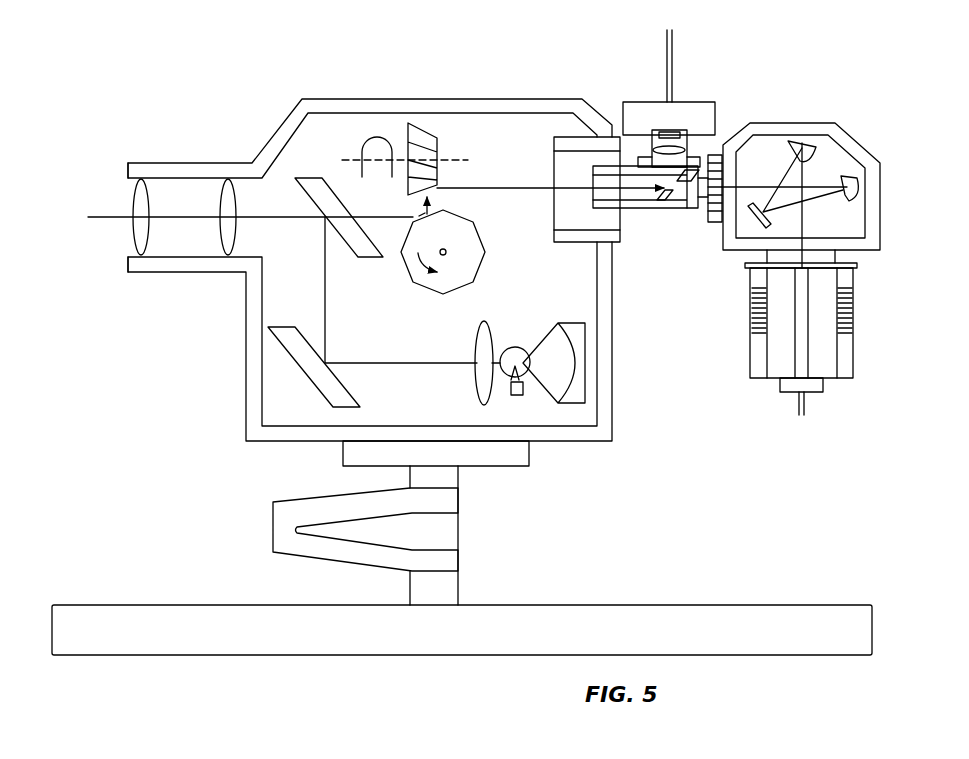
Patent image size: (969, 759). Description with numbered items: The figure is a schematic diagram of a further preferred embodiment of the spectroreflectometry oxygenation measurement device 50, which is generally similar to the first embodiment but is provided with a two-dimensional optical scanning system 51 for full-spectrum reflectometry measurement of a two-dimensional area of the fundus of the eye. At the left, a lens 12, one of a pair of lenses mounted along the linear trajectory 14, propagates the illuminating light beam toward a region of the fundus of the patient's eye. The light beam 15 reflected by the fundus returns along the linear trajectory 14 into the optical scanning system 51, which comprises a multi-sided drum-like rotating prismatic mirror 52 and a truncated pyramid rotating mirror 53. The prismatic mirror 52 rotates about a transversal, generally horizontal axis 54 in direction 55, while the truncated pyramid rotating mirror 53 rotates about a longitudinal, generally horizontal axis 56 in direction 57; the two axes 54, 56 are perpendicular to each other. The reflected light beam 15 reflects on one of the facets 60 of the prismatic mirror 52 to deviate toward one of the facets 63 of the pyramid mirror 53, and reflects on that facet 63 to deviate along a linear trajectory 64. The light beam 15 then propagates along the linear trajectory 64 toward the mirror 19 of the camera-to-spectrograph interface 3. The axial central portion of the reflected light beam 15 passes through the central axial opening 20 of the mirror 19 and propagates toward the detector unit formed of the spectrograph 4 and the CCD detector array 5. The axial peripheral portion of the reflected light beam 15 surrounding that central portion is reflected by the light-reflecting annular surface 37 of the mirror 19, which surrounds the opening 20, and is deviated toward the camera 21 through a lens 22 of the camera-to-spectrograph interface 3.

The camera-to-spectrograph interface 3 is at (643, 216).
The spectrograph 4 is at (856, 126).
The CCD detector array 5 is at (747, 350).
The lens 12 is at (146, 192).
The linear trajectory 14 is at (193, 215).
The reflected light beam 15 is at (265, 218).
The mirror 19 is at (663, 204).
The central axial opening 20 is at (681, 188).
The camera 21 is at (648, 108).
The lens 22 is at (673, 148).
The light-reflecting annular surface 37 is at (650, 182).
The spectroreflectometry oxygenation measurement device 50 is at (278, 96).
The two-dimensional optical scanning system 51 is at (356, 180).
The multi-sided drum-like rotating prismatic mirror 52 is at (433, 283).
The truncated pyramid rotating mirror 53 is at (428, 137).
The transversal axis 54 is at (448, 252).
The direction of rotation 55 is at (410, 272).
The longitudinal axis 56 is at (358, 162).
The direction of rotation 57 is at (388, 139).
The facet 60 is at (421, 214).
The facet 63 is at (417, 191).
The linear trajectory 64 is at (523, 187).